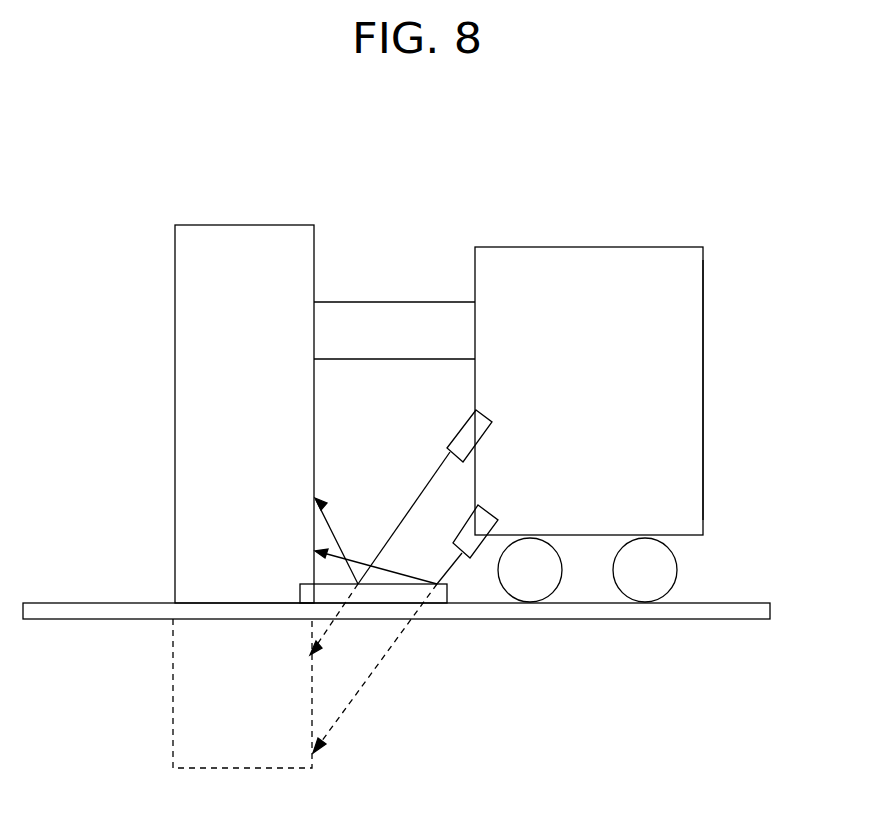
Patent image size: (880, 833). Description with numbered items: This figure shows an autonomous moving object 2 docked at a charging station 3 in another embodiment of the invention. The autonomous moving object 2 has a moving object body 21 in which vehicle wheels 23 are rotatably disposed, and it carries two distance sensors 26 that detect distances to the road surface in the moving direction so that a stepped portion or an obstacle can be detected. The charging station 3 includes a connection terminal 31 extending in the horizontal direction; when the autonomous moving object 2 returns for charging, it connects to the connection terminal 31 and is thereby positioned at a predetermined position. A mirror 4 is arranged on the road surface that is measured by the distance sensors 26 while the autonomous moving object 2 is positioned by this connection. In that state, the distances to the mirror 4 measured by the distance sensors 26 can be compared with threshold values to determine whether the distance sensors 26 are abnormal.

The autonomous moving object 2 is at (615, 246).
The charging station 3 is at (251, 224).
The mirror 4 is at (439, 597).
The moving object body 21 is at (700, 351).
The vehicle wheels 23 is at (528, 594).
The distance sensor 26 is at (470, 430).
The connection terminal 31 is at (396, 301).